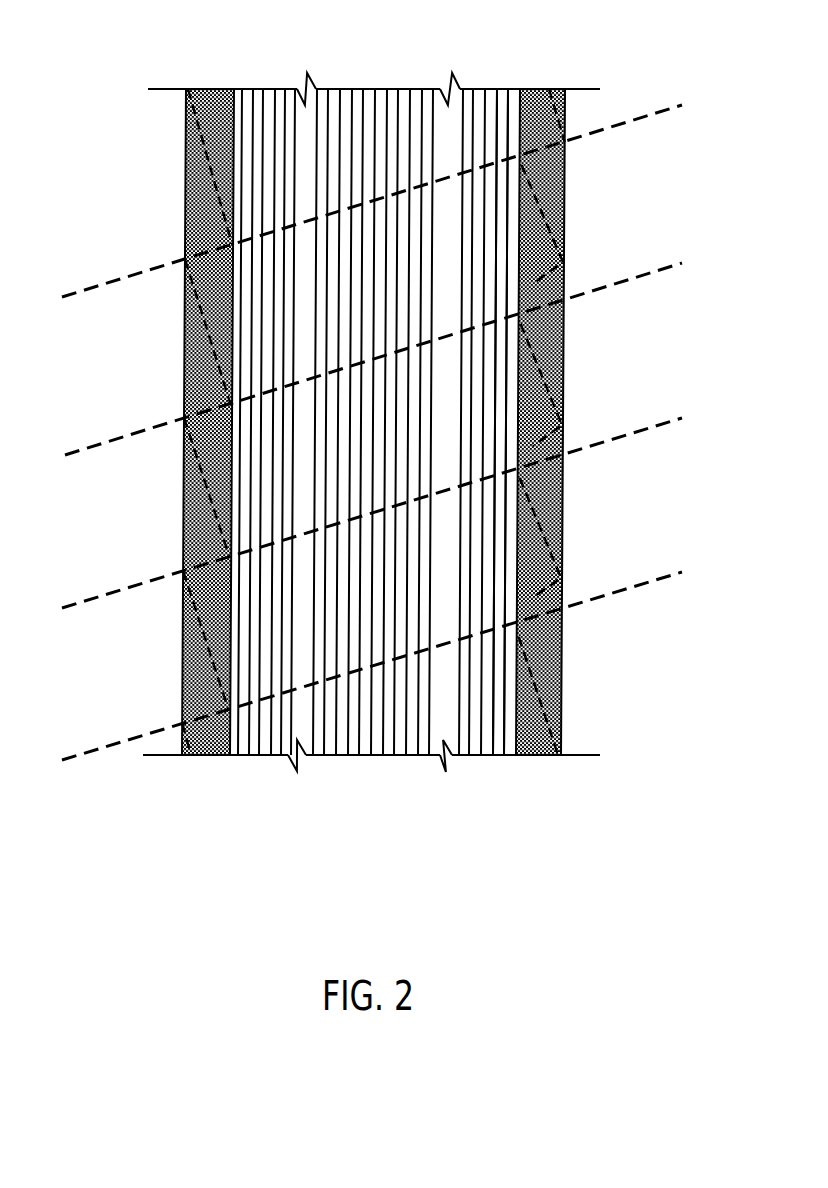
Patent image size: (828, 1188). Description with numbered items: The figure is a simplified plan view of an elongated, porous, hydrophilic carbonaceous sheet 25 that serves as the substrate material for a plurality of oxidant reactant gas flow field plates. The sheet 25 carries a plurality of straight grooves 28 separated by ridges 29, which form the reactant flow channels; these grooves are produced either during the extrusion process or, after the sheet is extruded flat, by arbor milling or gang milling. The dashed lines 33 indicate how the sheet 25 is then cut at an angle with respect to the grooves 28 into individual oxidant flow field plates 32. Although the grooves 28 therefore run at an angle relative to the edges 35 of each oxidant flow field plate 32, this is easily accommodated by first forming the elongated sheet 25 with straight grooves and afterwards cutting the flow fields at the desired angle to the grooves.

The carbonaceous sheet 25 is at (570, 212).
The straight grooves 28 is at (513, 418).
The ridges 29 is at (507, 567).
The oxidant flow field plate 32 is at (564, 260).
The dashed lines 33 is at (640, 118).
The edges 35 is at (533, 343).